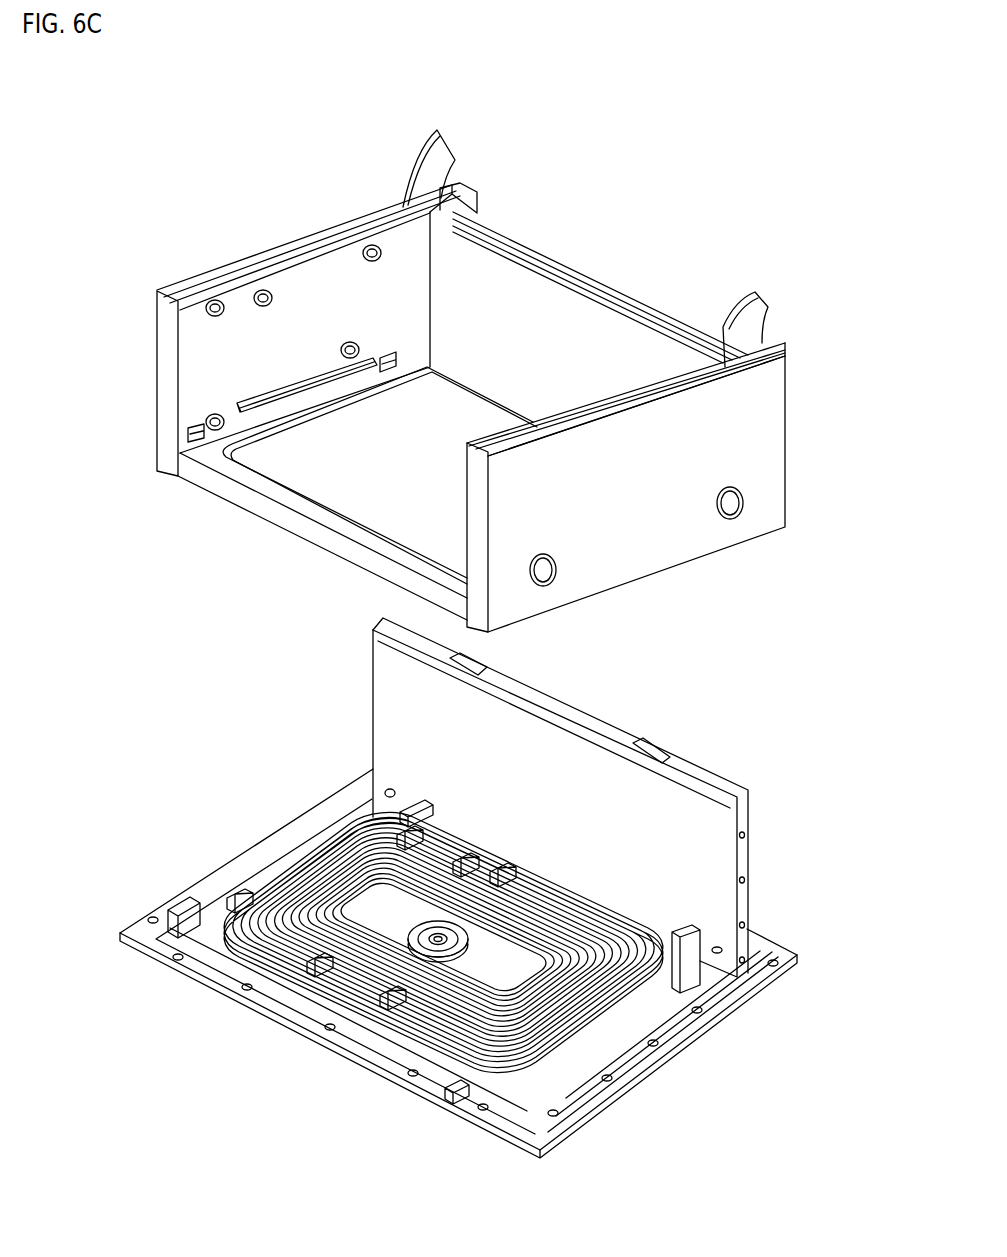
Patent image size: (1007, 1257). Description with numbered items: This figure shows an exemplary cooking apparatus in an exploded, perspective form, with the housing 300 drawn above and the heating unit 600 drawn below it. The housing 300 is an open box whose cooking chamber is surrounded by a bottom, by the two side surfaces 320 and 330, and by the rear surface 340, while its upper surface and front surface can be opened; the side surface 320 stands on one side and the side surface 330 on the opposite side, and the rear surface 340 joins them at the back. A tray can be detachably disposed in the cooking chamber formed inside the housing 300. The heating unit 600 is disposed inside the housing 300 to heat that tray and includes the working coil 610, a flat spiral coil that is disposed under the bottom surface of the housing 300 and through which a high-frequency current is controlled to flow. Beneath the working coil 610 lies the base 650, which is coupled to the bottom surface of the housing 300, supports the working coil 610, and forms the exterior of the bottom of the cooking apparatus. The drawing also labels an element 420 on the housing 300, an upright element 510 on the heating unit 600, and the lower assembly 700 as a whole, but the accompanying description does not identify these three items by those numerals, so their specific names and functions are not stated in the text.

The housing 300 is at (469, 374).
The side surface 320 is at (223, 360).
The side surface 330 is at (627, 393).
The rear surface 340 is at (577, 323).
The bottom tray 420 is at (317, 468).
The vertical panel 510 is at (388, 712).
The heating unit 600 is at (163, 903).
The working coil 610 is at (282, 853).
The base 650 is at (453, 1092).
The lower assembly 700 is at (468, 896).